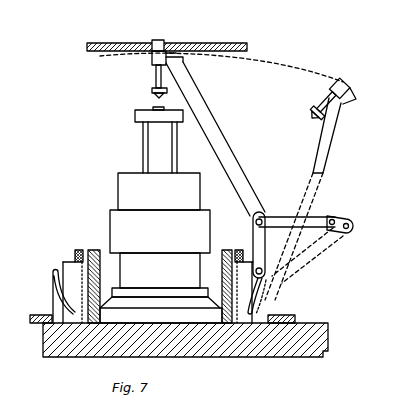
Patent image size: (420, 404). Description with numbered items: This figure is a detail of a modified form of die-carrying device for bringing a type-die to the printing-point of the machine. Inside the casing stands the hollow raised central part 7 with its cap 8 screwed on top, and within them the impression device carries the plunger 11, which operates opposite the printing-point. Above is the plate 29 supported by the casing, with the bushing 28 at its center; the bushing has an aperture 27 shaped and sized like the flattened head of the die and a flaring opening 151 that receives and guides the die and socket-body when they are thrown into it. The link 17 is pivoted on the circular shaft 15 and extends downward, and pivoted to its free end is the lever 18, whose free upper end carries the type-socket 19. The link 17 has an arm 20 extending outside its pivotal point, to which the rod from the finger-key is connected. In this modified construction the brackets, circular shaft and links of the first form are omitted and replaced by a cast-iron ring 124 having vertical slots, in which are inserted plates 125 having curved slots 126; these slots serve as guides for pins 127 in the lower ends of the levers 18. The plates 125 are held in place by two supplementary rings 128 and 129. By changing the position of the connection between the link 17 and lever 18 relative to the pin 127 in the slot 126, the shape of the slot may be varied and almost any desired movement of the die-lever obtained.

The raised central part 7 is at (160, 280).
The cap 8 is at (118, 177).
The plunger 11 is at (153, 108).
The circular shaft 15 is at (331, 215).
The link 17 is at (282, 214).
The lever 18 is at (228, 152).
The type-socket 19 is at (148, 62).
The arm 20 is at (348, 220).
The aperture 27 is at (160, 38).
The bushing 28 is at (155, 40).
The plate 29 is at (249, 48).
The cast-iron ring 124 is at (92, 250).
The plate 125 is at (52, 303).
The curved slot 126 is at (60, 266).
The pin 127 is at (268, 280).
The supplementary ring 128 is at (38, 325).
The supplementary ring 129 is at (74, 249).
The flaring opening 151 is at (148, 53).